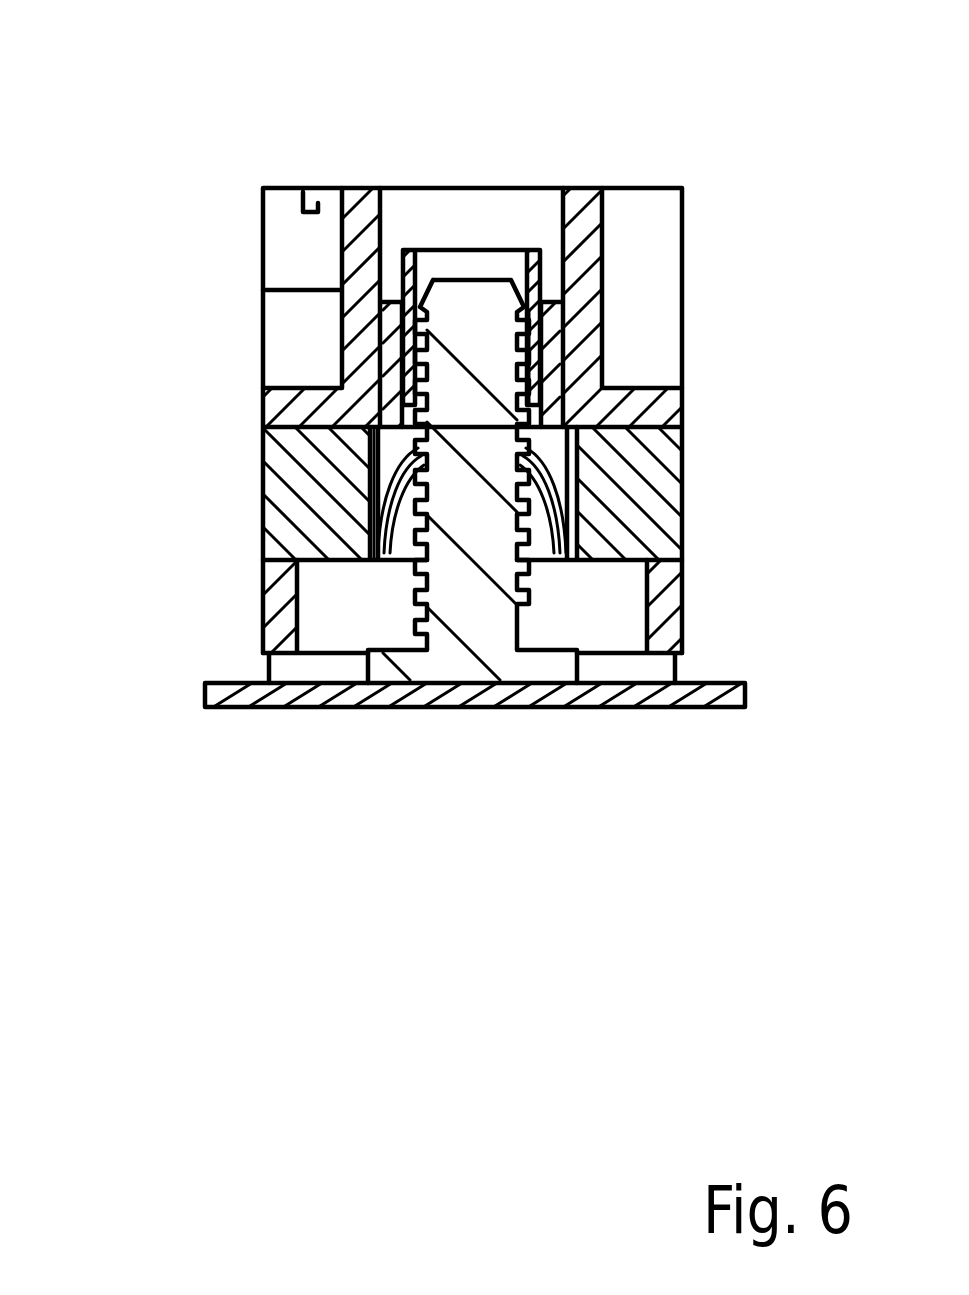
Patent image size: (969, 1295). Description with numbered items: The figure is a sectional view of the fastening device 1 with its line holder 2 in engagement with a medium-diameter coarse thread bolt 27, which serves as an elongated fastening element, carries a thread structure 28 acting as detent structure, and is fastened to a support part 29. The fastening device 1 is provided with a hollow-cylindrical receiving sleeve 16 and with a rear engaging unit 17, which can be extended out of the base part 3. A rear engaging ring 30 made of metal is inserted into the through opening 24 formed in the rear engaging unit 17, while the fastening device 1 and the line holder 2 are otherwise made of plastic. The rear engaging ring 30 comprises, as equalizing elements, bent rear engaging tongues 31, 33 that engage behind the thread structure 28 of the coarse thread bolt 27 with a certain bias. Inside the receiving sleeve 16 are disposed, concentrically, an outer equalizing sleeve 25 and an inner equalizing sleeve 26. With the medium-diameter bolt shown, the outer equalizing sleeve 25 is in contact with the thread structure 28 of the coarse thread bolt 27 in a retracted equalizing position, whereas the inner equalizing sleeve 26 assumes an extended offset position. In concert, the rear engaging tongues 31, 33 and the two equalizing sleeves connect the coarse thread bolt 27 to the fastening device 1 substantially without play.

The fastening device 1 is at (447, 153).
The line holder 2 is at (195, 148).
The base part 3 is at (665, 603).
The receiving sleeve 16 is at (585, 243).
The rear engaging unit 17 is at (292, 505).
The through opening 24 is at (400, 548).
The outer equalizing sleeve 25 is at (565, 346).
The inner equalizing sleeve 26 is at (565, 274).
The coarse thread bolt 27 is at (458, 303).
The thread structure 28 is at (418, 355).
The support part 29 is at (278, 697).
The rear engaging ring 30 is at (387, 432).
The rear engaging tongue 31 is at (367, 477).
The rear engaging tongue 33 is at (557, 453).